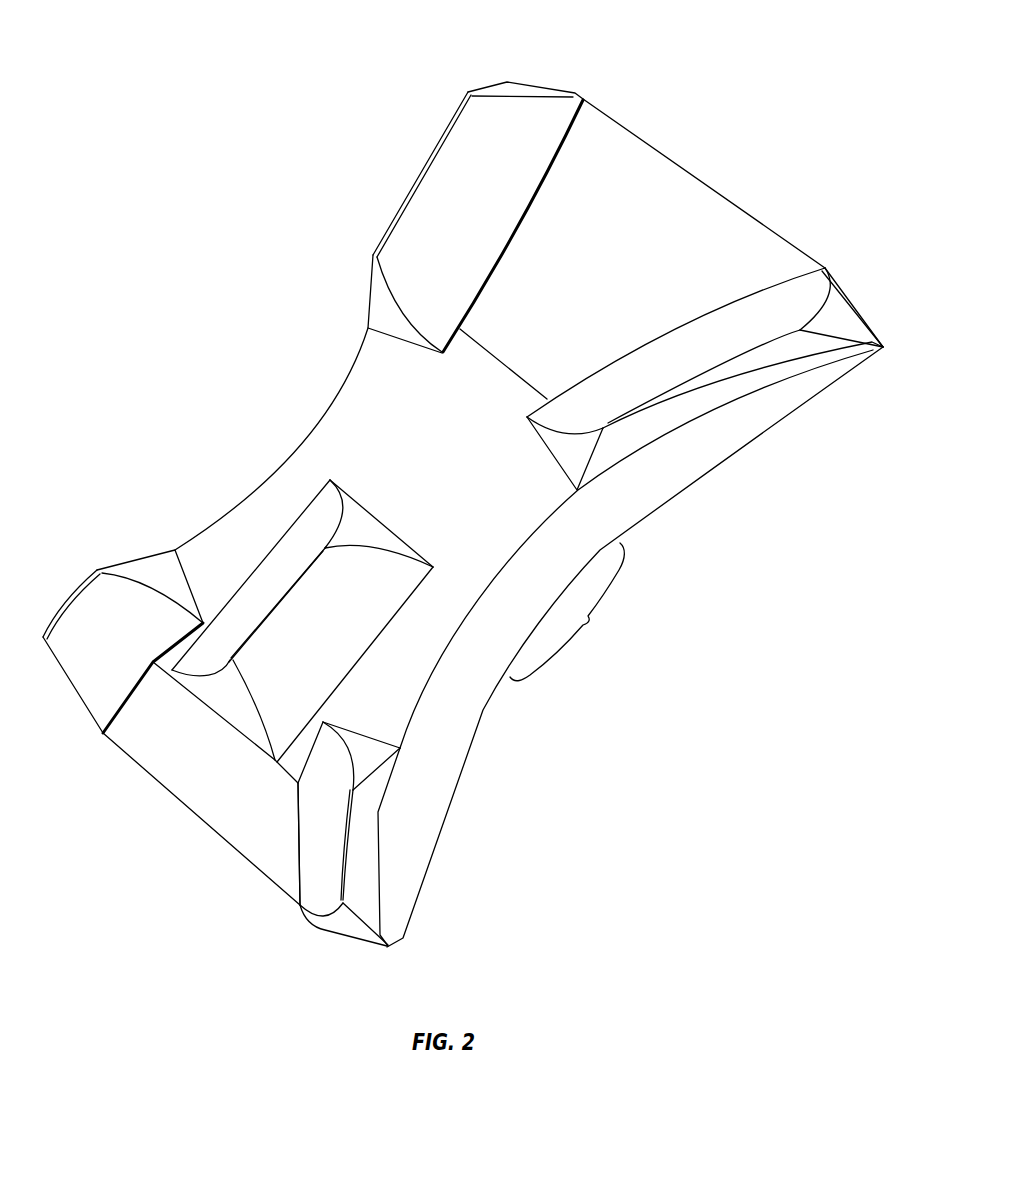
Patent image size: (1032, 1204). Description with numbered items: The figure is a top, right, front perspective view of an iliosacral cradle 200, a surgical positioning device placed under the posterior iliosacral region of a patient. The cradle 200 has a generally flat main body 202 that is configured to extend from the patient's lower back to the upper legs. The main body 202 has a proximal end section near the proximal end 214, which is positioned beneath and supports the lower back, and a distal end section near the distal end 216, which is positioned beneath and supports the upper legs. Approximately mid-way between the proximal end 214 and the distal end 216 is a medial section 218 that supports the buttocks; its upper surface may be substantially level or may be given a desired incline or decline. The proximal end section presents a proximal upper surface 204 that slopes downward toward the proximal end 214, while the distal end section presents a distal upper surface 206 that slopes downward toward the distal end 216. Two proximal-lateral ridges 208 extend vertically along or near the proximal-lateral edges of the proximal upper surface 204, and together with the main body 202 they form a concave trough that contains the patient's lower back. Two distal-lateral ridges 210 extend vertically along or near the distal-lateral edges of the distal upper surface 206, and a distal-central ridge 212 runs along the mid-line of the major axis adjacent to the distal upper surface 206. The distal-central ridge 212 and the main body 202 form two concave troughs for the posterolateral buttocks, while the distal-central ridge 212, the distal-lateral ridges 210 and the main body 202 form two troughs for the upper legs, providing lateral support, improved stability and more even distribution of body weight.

The iliosacral cradle 200 is at (257, 143).
The main body 202 is at (453, 465).
The proximal upper surface 204 is at (733, 267).
The distal upper surface 206 is at (258, 812).
The proximal-lateral ridges 208 is at (518, 128).
The distal-lateral ridges 210 is at (125, 605).
The distal-central ridge 212 is at (313, 530).
The proximal end 214 is at (668, 155).
The distal end 216 is at (185, 808).
The medial section 218 is at (568, 612).